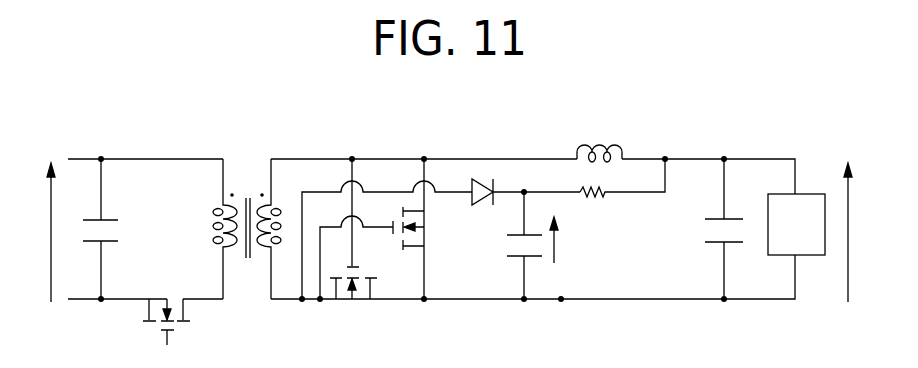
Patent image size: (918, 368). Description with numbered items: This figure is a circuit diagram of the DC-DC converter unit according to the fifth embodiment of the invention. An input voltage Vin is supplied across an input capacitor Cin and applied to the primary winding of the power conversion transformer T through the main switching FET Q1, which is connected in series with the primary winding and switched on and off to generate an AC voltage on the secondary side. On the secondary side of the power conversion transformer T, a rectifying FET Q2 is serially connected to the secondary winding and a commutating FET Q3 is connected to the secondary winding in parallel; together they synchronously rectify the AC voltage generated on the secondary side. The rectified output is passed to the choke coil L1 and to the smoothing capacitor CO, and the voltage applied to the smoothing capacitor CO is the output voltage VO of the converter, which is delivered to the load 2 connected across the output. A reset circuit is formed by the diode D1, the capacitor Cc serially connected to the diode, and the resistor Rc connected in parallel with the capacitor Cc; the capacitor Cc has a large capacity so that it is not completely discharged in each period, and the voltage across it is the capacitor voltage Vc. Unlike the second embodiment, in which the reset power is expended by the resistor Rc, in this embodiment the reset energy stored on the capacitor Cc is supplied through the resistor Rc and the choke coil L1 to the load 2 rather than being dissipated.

The load 2 is at (812, 194).
The input capacitor Cin is at (126, 229).
The main switching FET Q1 is at (153, 323).
The power conversion transformer T is at (247, 212).
The rectifying FET Q2 is at (387, 246).
The commutating FET Q3 is at (408, 229).
The diode D1 is at (511, 183).
The resistor Rc is at (622, 178).
The capacitor Cc is at (507, 245).
The choke coil L1 is at (599, 138).
The smoothing capacitor CO is at (714, 229).
The input voltage Vin is at (28, 232).
The capacitor voltage Vc is at (573, 246).
The output voltage VO is at (866, 232).